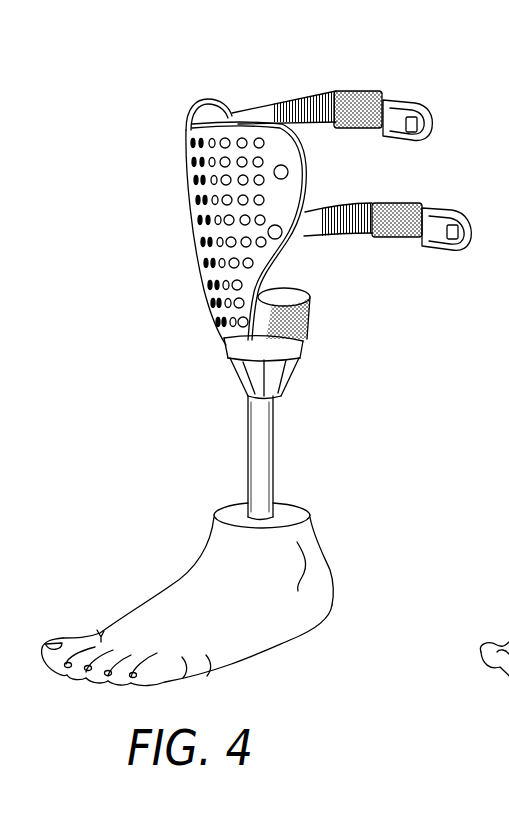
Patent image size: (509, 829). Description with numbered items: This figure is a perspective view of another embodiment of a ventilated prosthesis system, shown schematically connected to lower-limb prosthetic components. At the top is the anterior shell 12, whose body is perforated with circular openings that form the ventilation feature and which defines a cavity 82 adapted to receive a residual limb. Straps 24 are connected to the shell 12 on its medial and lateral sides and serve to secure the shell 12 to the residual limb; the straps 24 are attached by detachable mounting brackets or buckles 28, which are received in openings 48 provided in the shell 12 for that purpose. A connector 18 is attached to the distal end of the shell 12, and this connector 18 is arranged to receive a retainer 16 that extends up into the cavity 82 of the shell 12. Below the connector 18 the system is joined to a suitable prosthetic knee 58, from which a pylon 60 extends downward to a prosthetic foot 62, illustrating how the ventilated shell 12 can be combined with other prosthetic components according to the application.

The anterior shell 12 is at (202, 245).
The retainer 16 is at (310, 311).
The connector 18 is at (288, 347).
The straps 24 is at (270, 108).
The buckles 28 is at (418, 103).
The openings 48 is at (288, 172).
The prosthetic knee 58 is at (250, 375).
The pylon 60 is at (265, 446).
The foot 62 is at (318, 572).
The cavity 82 is at (318, 277).